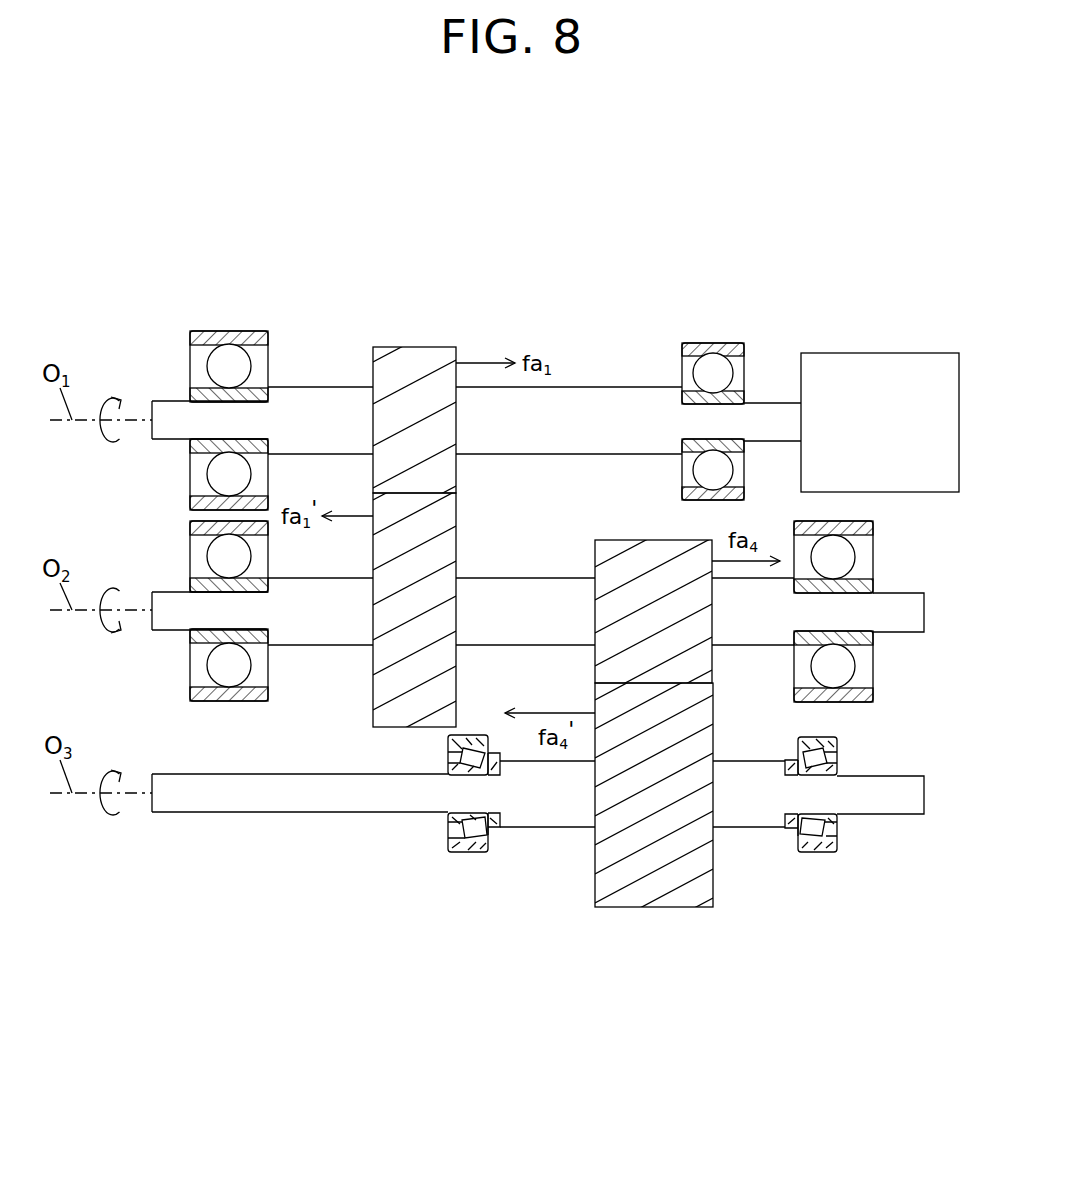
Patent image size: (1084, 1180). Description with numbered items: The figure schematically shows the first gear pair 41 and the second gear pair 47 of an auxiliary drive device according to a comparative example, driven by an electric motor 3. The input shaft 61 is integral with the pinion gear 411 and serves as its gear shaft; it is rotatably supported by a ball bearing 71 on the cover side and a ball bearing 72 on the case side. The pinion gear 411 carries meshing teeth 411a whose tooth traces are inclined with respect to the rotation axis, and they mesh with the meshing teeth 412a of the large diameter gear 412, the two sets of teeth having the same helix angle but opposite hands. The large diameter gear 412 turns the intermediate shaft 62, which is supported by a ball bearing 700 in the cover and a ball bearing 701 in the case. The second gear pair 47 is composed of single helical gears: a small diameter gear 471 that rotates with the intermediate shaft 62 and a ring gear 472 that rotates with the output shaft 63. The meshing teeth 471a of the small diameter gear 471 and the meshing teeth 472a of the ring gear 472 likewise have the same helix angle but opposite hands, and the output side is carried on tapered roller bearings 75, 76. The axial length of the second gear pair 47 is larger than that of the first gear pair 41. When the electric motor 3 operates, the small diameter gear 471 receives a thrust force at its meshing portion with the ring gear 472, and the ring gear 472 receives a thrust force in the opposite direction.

The electric motor 3 is at (892, 353).
The first gear pair 41 is at (385, 486).
The pinion gear 411 is at (418, 406).
The meshing teeth 411a is at (430, 413).
The large diameter gear 412 is at (369, 600).
The meshing teeth 412a is at (385, 655).
The second gear pair 47 is at (656, 741).
The small diameter gear 471 is at (607, 602).
The meshing teeth 471a is at (608, 597).
The ring gear 472 is at (701, 808).
The meshing teeth 472a is at (665, 803).
The input shaft 61 is at (758, 400).
The intermediate shaft 62 is at (915, 593).
The output shaft 63 is at (913, 775).
The ball bearing 71 is at (233, 331).
The ball bearing 72 is at (712, 343).
The tapered roller bearing 75 is at (458, 853).
The tapered roller bearing 76 is at (837, 843).
The ball bearing 700 is at (190, 537).
The ball bearing 701 is at (875, 533).